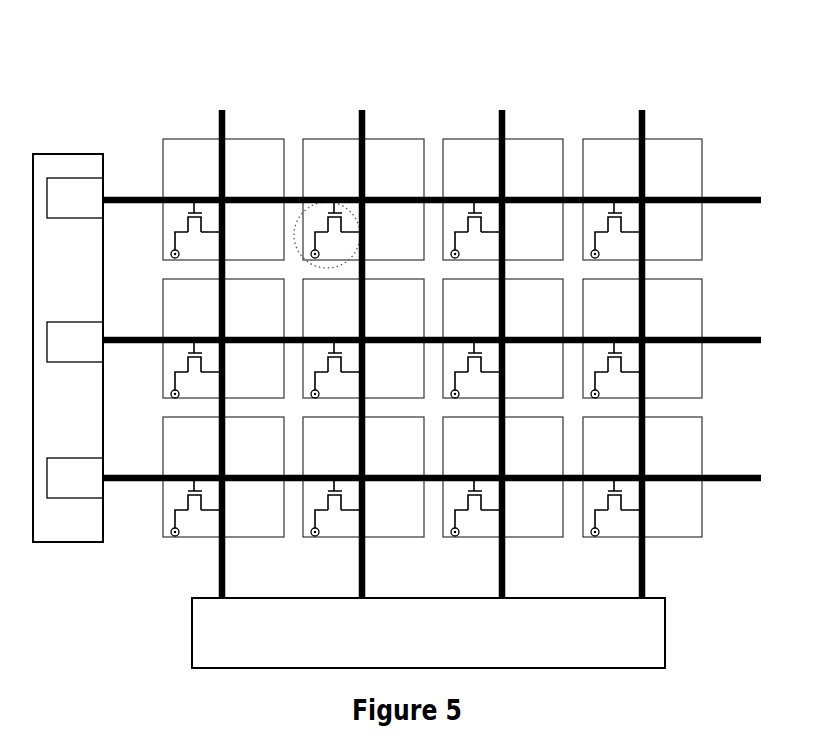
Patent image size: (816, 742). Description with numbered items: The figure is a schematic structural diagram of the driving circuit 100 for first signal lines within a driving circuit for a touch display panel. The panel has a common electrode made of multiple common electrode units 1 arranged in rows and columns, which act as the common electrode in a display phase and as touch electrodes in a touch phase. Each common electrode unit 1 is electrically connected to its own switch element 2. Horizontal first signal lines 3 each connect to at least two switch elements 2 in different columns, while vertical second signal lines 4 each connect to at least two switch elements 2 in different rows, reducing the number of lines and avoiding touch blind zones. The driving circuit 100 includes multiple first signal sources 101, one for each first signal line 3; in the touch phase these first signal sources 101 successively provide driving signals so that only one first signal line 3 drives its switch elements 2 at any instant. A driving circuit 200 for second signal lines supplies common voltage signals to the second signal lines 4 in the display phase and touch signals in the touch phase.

The common electrode unit 1 is at (526, 152).
The switch element 2 is at (297, 219).
The first signal line 3 is at (728, 194).
The second signal line 4 is at (508, 99).
The driving circuit for first signal lines 100 is at (58, 151).
The first signal source 101 is at (75, 338).
The driving circuit for second signal lines 200 is at (668, 641).